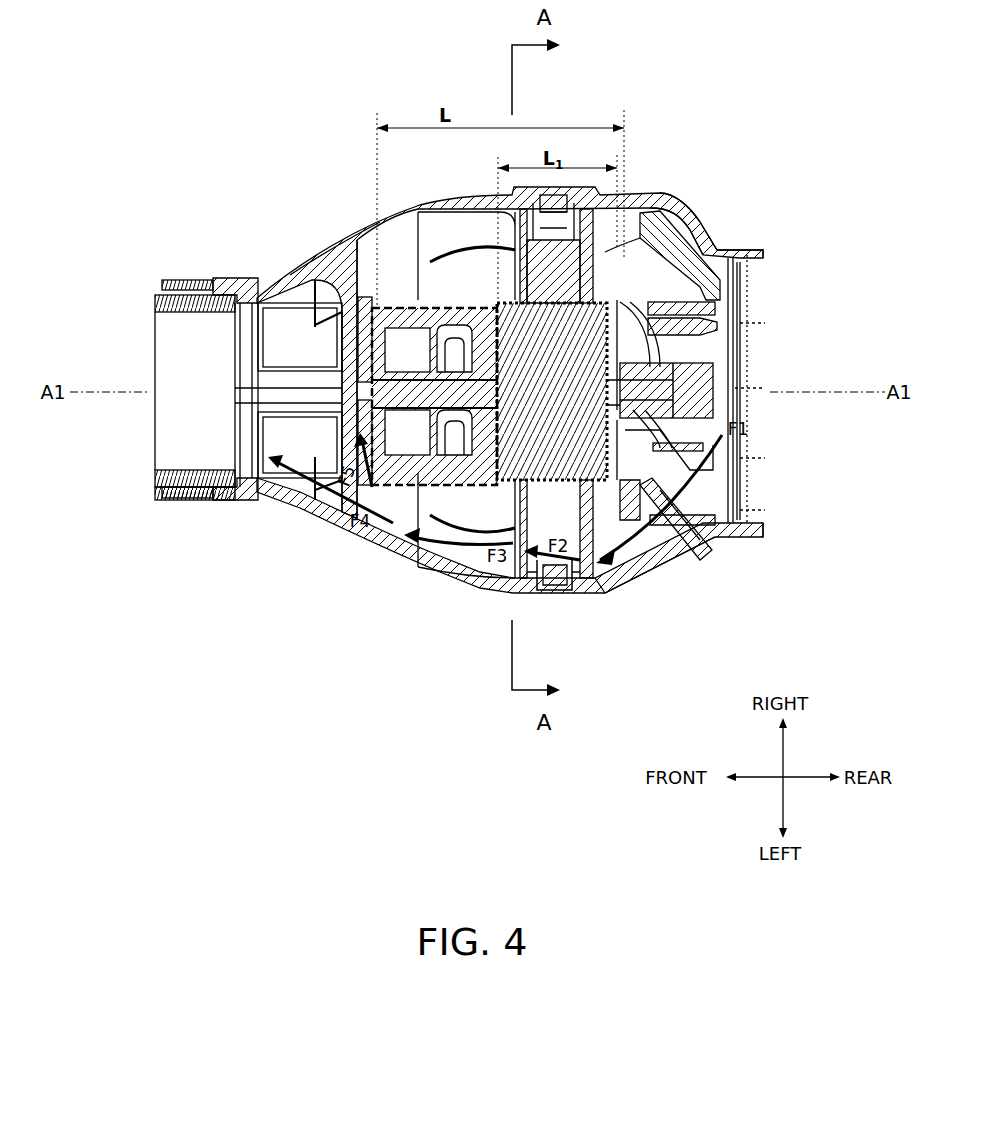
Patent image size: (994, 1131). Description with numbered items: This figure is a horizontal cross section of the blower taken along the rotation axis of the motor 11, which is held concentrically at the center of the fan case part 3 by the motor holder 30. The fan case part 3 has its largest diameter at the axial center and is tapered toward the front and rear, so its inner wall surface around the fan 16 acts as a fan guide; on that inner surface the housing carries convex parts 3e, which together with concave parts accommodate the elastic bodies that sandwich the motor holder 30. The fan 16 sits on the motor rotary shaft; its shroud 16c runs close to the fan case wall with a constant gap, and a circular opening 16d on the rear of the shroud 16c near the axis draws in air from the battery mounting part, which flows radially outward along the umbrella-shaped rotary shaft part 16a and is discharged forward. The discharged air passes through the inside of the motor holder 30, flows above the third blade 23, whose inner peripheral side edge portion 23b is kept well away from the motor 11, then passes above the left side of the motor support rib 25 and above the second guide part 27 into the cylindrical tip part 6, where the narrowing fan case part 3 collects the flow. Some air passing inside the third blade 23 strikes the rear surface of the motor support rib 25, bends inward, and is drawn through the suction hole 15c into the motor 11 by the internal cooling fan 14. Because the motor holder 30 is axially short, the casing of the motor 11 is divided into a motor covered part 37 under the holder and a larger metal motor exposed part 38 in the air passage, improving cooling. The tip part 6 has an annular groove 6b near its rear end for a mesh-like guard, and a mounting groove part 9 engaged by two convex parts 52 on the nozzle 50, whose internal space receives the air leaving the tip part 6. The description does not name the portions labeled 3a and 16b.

The fan case part 3 is at (403, 200).
The housing inclined surface 3a is at (337, 257).
The convex parts 3e is at (550, 582).
The tip part 6 is at (210, 275).
The annular groove 6b is at (248, 303).
The mounting groove part 9 is at (183, 280).
The motor 11 is at (600, 240).
The cooling fan 14 is at (450, 447).
The suction hole 15c is at (393, 435).
The fan 16 is at (723, 312).
The umbrella-shaped rotary shaft part 16a is at (640, 490).
The cover inner wall 16b is at (688, 503).
The shroud 16c is at (653, 562).
The circular opening 16d is at (745, 477).
The third blade 23 is at (447, 230).
The inner peripheral side edge portion 23b is at (443, 260).
The motor support rib 25 is at (263, 353).
The second guide part 27 is at (277, 422).
The motor holder 30 is at (625, 332).
The motor covered part 37 is at (607, 350).
The motor exposed part 38 is at (397, 303).
The nozzle 50 is at (163, 477).
The convex parts 52 is at (170, 293).